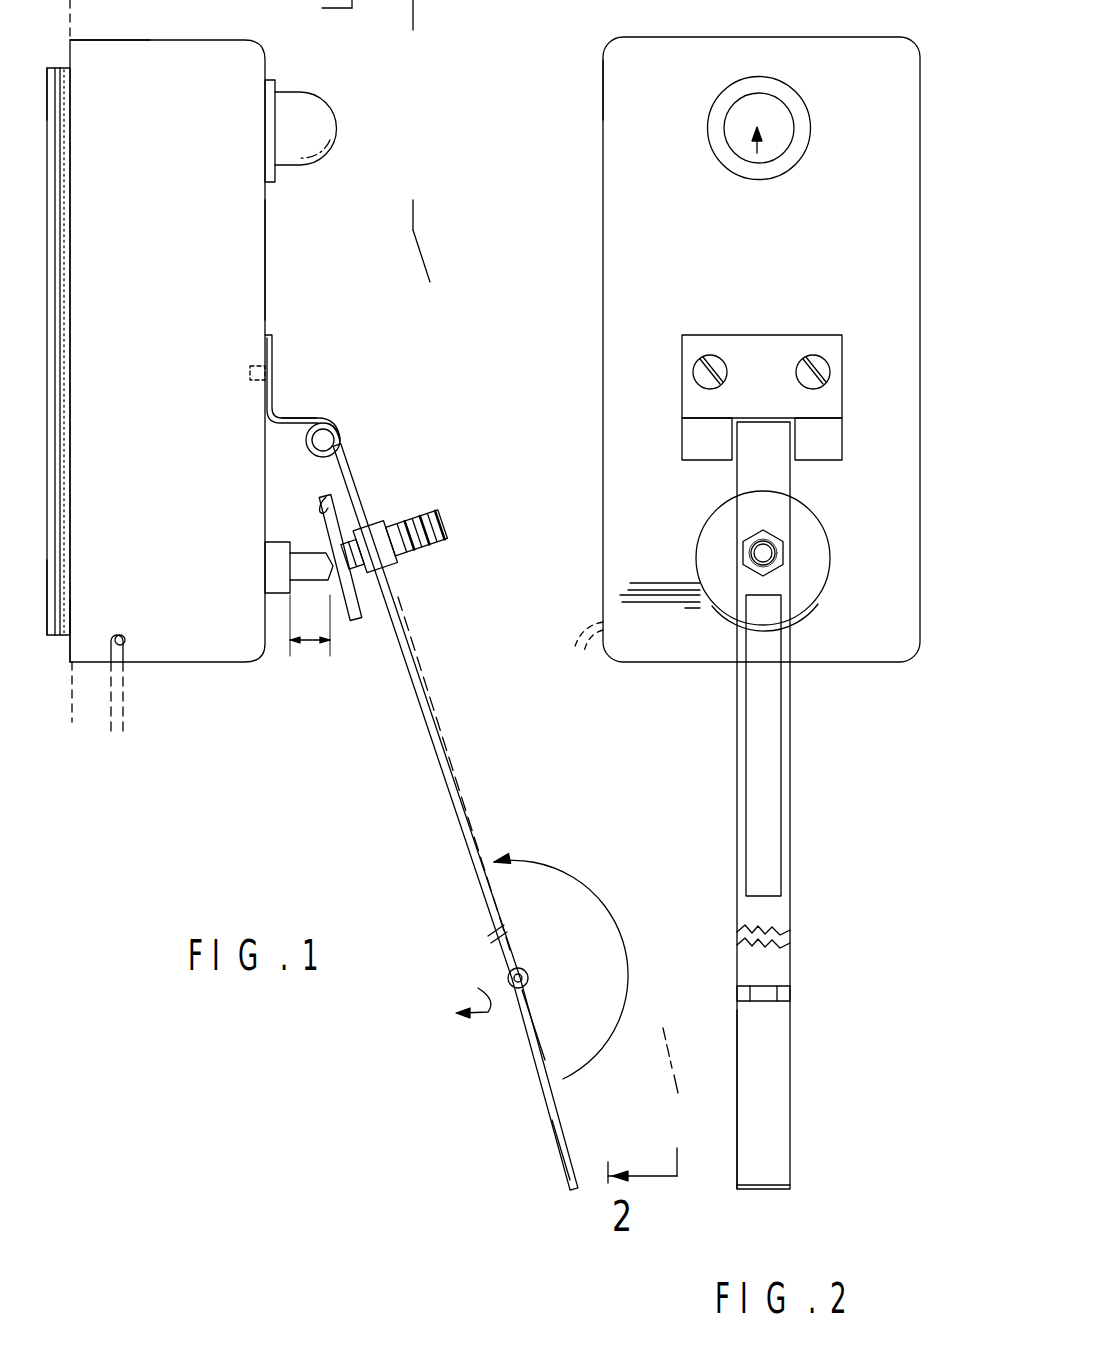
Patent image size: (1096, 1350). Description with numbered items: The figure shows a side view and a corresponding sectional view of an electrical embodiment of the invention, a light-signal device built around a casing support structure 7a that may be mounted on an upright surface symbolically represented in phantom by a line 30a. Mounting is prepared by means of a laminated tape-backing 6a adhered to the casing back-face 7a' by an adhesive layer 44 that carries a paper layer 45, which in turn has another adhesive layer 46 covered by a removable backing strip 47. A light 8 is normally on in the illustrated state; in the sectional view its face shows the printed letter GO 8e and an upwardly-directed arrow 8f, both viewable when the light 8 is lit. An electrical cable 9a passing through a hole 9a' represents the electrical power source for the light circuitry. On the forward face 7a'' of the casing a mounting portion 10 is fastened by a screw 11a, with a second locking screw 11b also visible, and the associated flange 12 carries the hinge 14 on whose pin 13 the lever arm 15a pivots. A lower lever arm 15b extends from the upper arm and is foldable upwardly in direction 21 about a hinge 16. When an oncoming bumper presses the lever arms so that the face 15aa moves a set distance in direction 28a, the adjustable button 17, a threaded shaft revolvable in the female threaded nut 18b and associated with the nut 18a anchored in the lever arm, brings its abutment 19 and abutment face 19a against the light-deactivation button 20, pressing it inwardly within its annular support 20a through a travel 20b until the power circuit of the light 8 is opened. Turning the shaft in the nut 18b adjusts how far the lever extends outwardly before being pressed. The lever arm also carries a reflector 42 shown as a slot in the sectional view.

In FIG. 1, the attachment laminated tape-backing 6a is at (47, 52).
In FIG. 2, the attachment laminated tape-backing 6a is at (578, 68).
In FIG. 1, the casing support structure 7a is at (167, 361).
In FIG. 1, the casing back-face 7a' is at (49, 658).
In FIG. 1, the forward face of the casing support structure 7a'' is at (292, 260).
In FIG. 2, the forward face of the casing support structure 7a'' is at (728, 349).
In FIG. 1, the upright surface 30a is at (72, 26).
In FIG. 1, the light 8 is at (302, 98).
In FIG. 2, the light 8 is at (780, 138).
In FIG. 2, the printed letter GO 8e is at (767, 104).
In FIG. 2, the upwardly-directed arrow 8f is at (752, 148).
In FIG. 1, the electrical cable 9a is at (146, 685).
In FIG. 2, the electrical cable 9a is at (624, 617).
In FIG. 1, the hole 9a' is at (140, 614).
In FIG. 1, the mounting portion 10 is at (274, 342).
In FIG. 2, the mounting portion 10 is at (692, 345).
In FIG. 1, the screw 11a is at (272, 372).
In FIG. 2, the screw 11a is at (722, 364).
In FIG. 2, the locking screw 11b is at (818, 362).
In FIG. 1, the flange 12 is at (312, 418).
In FIG. 2, the flange 12 is at (828, 442).
In FIG. 1, the pivot pin 13 is at (324, 440).
In FIG. 1, the hinge 14 is at (342, 440).
In FIG. 2, the hinge 14 is at (706, 461).
In FIG. 1, the lever arm 15a is at (362, 492).
In FIG. 2, the lever arm 15a is at (772, 480).
In FIG. 1, the face of the lever arm 15aa is at (534, 1065).
In FIG. 1, the lever arm 15b is at (564, 1115).
In FIG. 2, the lever arm 15b is at (770, 1090).
In FIG. 1, the hinge 16 is at (530, 978).
In FIG. 2, the hinge 16 is at (780, 992).
In FIG. 1, the adjustable button 17 is at (434, 526).
In FIG. 2, the adjustable button 17 is at (750, 553).
In FIG. 1, the nut 18a is at (392, 563).
In FIG. 2, the nut 18a is at (785, 555).
In FIG. 1, the female threaded nut 18b is at (380, 572).
In FIG. 1, the abutment 19 is at (356, 622).
In FIG. 2, the abutment 19 is at (820, 526).
In FIG. 1, the abutment face 19a is at (320, 500).
In FIG. 1, the light-deactivation button 20 is at (308, 556).
In FIG. 1, the annular support 20a is at (268, 572).
In FIG. 1, the plunger travel 20b is at (312, 644).
In FIG. 1, the direction 21 is at (568, 876).
In FIG. 1, the direction 28a is at (460, 989).
In FIG. 2, the arm slot 42 is at (768, 768).
In FIG. 1, the adhesive layer 44 is at (72, 124).
In FIG. 1, the paper layer 45 is at (65, 166).
In FIG. 1, the adhesive layer 46 is at (62, 254).
In FIG. 1, the backing strip 47 is at (46, 588).